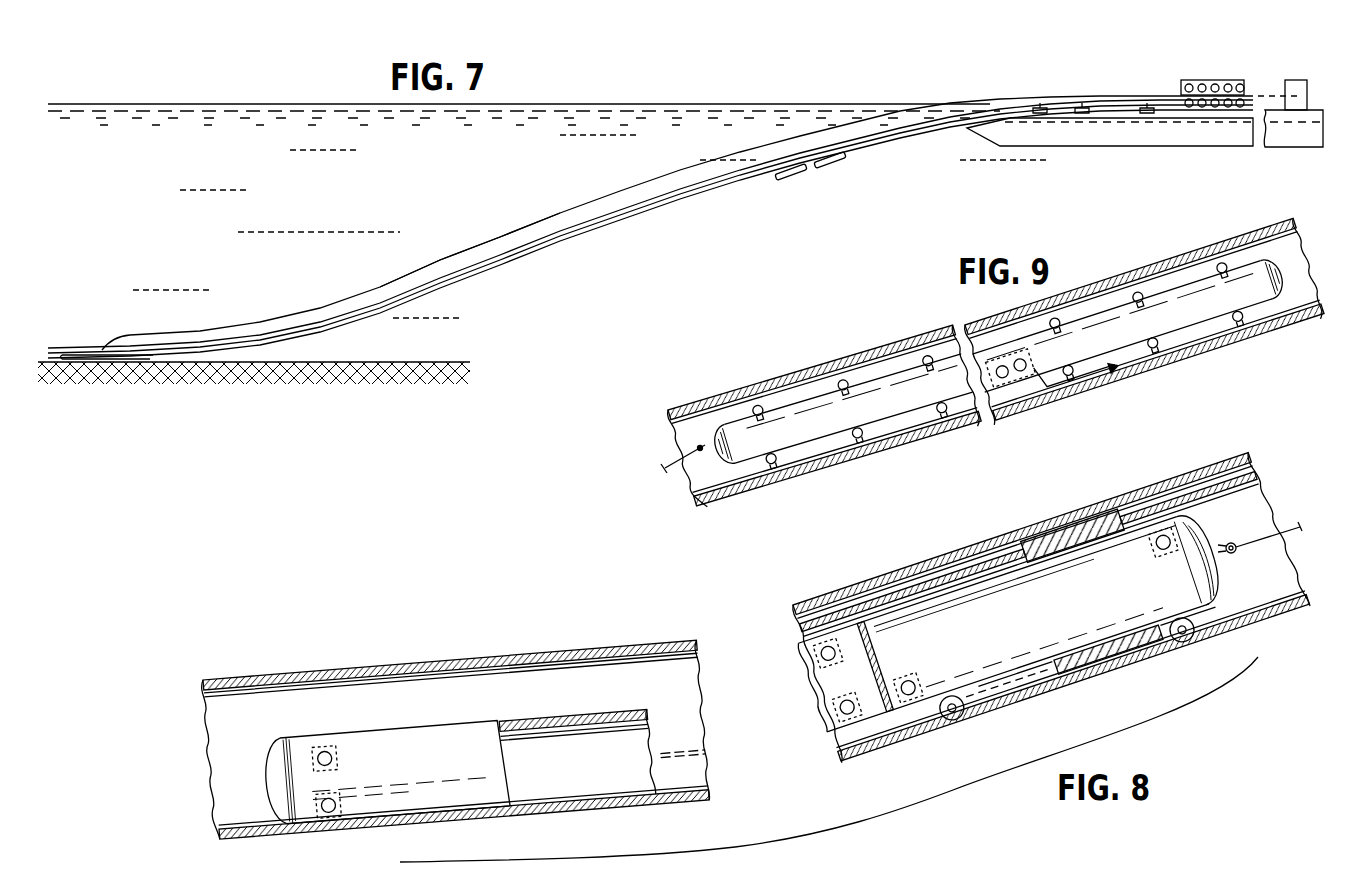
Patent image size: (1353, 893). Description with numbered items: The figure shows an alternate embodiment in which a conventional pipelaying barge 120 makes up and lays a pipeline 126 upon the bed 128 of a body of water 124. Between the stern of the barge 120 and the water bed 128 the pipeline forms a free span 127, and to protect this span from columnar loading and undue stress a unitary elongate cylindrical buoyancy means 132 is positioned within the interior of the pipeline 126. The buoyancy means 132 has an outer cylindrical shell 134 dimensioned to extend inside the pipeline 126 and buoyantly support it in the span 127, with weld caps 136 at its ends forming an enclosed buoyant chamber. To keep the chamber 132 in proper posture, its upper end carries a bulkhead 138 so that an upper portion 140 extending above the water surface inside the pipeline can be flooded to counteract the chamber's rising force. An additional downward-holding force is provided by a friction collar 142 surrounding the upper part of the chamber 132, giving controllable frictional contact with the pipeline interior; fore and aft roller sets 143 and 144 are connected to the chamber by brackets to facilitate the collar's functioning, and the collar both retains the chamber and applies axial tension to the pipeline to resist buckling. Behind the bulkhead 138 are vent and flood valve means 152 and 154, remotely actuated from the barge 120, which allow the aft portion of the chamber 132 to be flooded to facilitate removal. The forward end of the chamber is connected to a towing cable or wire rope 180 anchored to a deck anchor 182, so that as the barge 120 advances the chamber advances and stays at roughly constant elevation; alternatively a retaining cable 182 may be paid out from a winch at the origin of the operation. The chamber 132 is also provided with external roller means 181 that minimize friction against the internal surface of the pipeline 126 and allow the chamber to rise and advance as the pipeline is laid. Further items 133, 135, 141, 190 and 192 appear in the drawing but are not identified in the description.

In FIG. 7, the pipelaying barge 120 is at (1114, 88).
In FIG. 7, the body of water 124 is at (369, 212).
In FIG. 7, the pipeline 126 is at (997, 102).
In FIG. 9, the pipeline 126 is at (1050, 398).
In FIG. 8, the pipeline 126 is at (572, 646).
In FIG. 7, the free span 127 is at (499, 240).
In FIG. 7, the bed of the body of water 128 is at (428, 372).
In FIG. 7, the unitary elongate cylindrical buoyancy means 132 is at (600, 230).
In FIG. 9, the unitary elongate cylindrical buoyancy means 132 is at (927, 298).
In FIG. 8, the unitary elongate cylindrical buoyancy means 132 is at (645, 668).
In FIG. 8, the bolt 133 is at (910, 681).
In FIG. 8, the outer cylindrical shell 134 is at (416, 767).
In FIG. 8, the bolt 135 is at (1160, 533).
In FIG. 8, the weld caps 136 is at (270, 777).
In FIG. 8, the bulkhead 138 is at (870, 725).
In FIG. 8, the upper portion of the chamber 140 is at (1024, 652).
In FIG. 8, the spacer 141 is at (990, 700).
In FIG. 8, the friction collar 142 is at (1060, 538).
In FIG. 8, the fore roller set 143 is at (950, 722).
In FIG. 8, the aft roller set 144 is at (1198, 646).
In FIG. 8, the vent valve means 152 is at (321, 753).
In FIG. 8, the flood valve means 154 is at (316, 806).
In FIG. 7, the towing cable 180 is at (1027, 98).
In FIG. 8, the towing cable 180 is at (1272, 525).
In FIG. 9, the external roller means 181 is at (754, 405).
In FIG. 7, the deck anchor 182 is at (1284, 74).
In FIG. 9, the deck anchor 182 is at (668, 464).
In FIG. 7, the roller assembly 190 is at (1209, 75).
In FIG. 7, the sleeve 192 is at (863, 160).